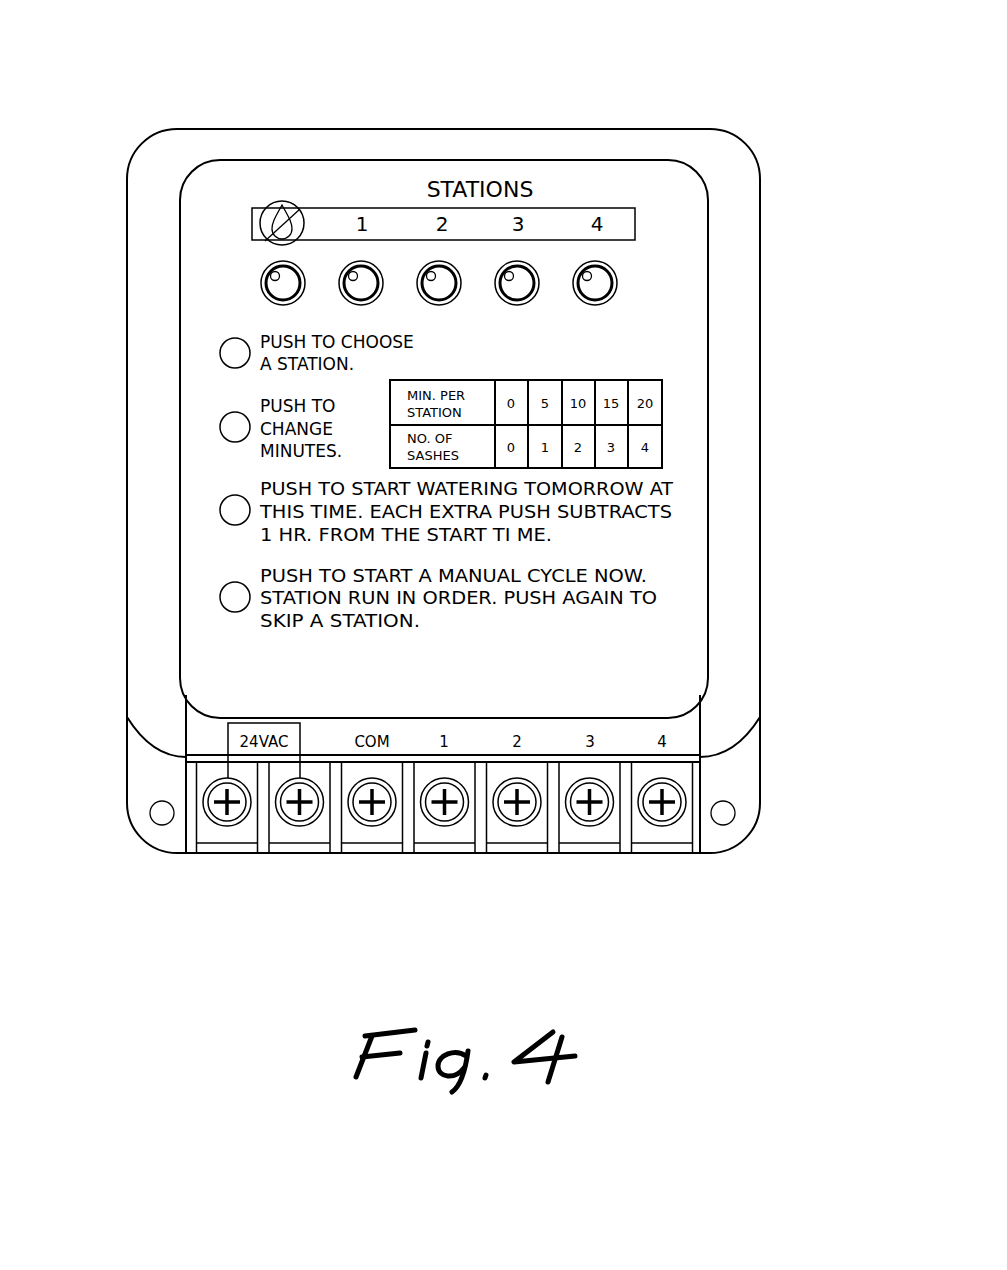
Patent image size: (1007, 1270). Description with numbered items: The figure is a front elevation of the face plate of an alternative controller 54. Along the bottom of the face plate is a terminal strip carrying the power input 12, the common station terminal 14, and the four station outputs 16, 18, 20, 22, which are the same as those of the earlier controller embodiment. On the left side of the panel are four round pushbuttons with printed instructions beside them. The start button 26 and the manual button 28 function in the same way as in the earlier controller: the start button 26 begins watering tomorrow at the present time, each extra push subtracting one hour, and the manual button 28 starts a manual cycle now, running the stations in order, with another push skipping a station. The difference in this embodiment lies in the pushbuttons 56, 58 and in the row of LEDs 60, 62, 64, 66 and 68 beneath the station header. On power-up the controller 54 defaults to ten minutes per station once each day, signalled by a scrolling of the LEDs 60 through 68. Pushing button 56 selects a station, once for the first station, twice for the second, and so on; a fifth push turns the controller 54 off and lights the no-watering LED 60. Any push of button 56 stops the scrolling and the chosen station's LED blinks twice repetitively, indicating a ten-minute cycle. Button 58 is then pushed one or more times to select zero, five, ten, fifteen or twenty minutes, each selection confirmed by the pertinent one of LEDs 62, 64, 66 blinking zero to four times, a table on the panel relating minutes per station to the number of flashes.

The power input 12 is at (302, 833).
The common station terminal 14 is at (380, 833).
The station output 16 is at (453, 833).
The station output 18 is at (527, 833).
The station output 20 is at (603, 833).
The station output 22 is at (672, 833).
The start button 26 is at (220, 510).
The manual button 28 is at (220, 597).
The alternative controller 54 is at (613, 122).
The pushbutton 56 is at (220, 353).
The pushbutton 58 is at (220, 427).
The no-watering LED 60 is at (261, 285).
The LED 62 is at (348, 268).
The LED 64 is at (424, 268).
The LED 66 is at (504, 262).
The LED 68 is at (619, 282).